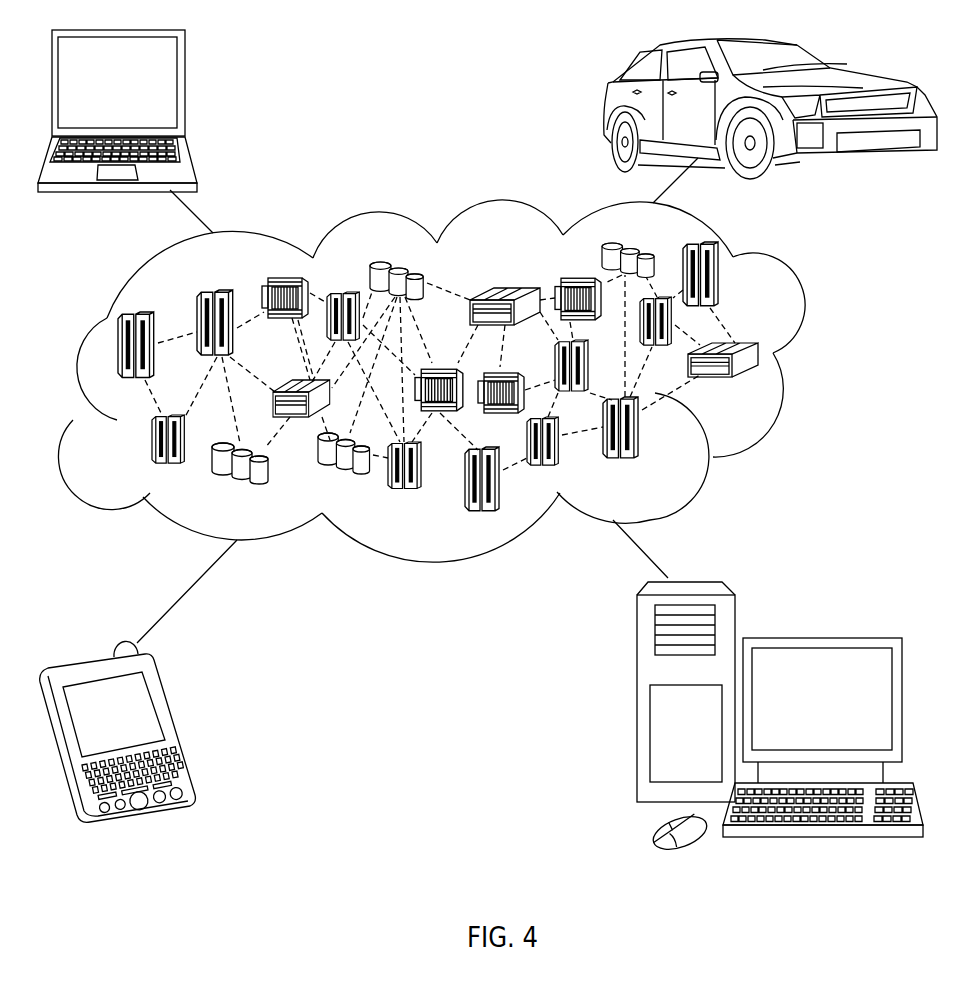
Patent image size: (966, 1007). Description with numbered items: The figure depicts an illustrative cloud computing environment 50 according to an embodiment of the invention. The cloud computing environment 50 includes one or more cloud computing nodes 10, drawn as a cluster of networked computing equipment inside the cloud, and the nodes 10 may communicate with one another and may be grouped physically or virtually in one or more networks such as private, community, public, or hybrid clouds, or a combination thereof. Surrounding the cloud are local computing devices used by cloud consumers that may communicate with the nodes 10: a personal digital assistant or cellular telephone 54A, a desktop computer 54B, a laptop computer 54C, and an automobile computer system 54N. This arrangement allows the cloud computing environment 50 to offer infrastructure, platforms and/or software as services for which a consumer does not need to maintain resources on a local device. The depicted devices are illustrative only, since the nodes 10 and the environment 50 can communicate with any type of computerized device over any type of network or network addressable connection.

The cloud computing node 10 is at (763, 389).
The cloud computing environment 50 is at (818, 362).
The personal digital assistant or cellular telephone 54A is at (173, 723).
The desktop computer 54B is at (818, 638).
The laptop computer 54C is at (185, 88).
The automobile computer system 54N is at (608, 108).